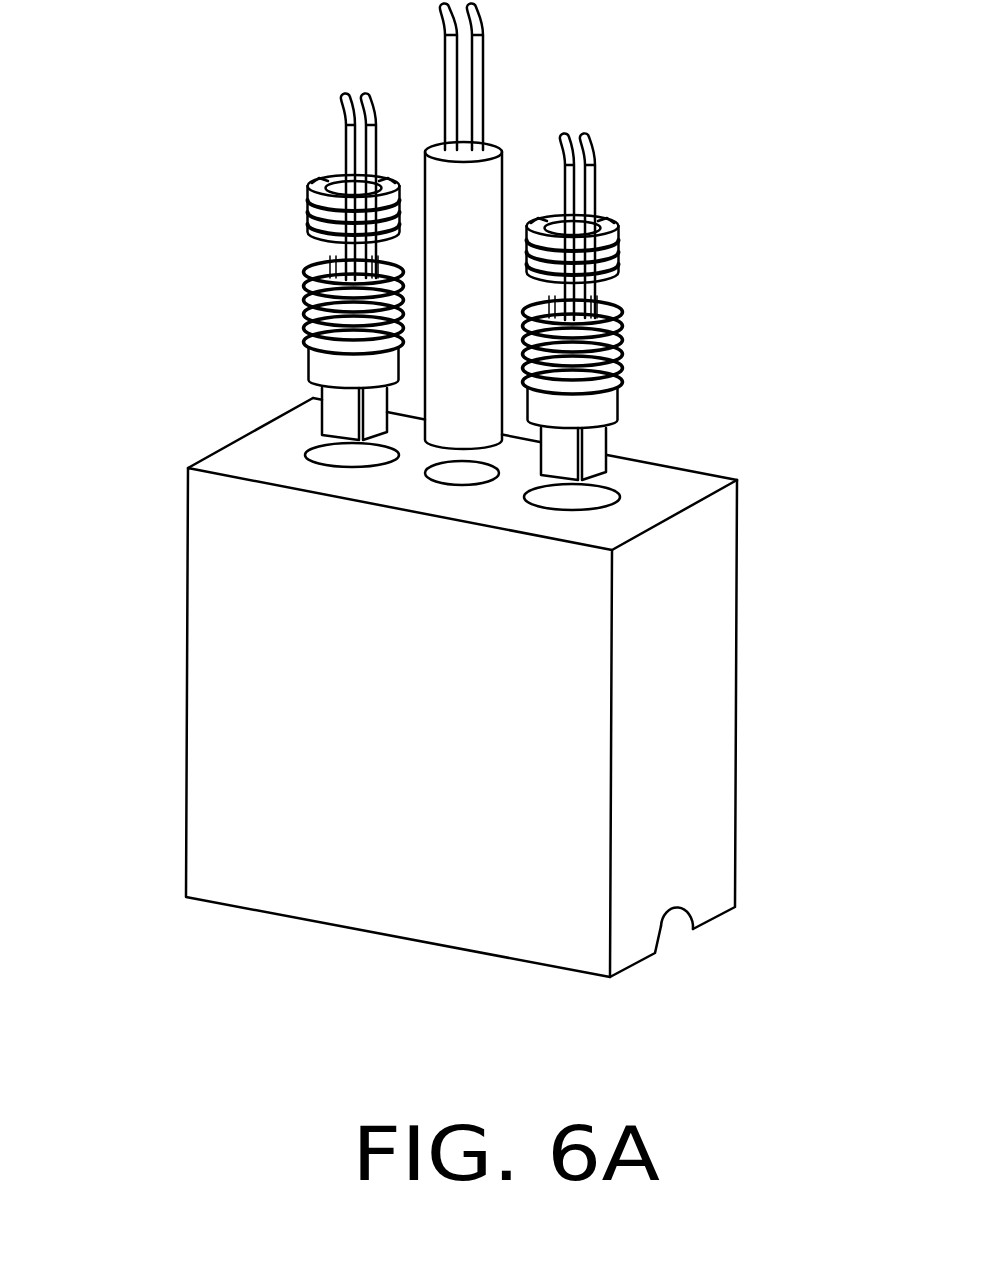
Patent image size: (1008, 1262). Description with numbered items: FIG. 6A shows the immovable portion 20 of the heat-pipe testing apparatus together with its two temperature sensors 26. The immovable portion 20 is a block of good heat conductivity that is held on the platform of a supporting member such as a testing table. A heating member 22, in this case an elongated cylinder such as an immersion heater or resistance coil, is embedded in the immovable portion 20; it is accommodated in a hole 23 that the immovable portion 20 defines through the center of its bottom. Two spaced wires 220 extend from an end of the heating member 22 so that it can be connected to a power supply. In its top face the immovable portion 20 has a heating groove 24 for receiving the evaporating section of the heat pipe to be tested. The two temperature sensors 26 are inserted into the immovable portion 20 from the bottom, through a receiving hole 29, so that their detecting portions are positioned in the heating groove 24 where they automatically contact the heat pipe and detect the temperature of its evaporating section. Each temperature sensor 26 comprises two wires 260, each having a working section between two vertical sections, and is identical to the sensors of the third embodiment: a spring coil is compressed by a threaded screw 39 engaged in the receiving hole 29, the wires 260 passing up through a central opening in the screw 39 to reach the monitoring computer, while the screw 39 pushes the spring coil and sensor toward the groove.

The immovable portion 20 is at (293, 772).
The heating member 22 is at (477, 173).
The wires 220 is at (478, 47).
The hole 23 is at (455, 478).
The heating groove 24 is at (668, 937).
The temperature sensors 26 is at (623, 377).
The wires 260 is at (588, 182).
The receiving hole 29 is at (325, 455).
The screw 39 is at (620, 240).